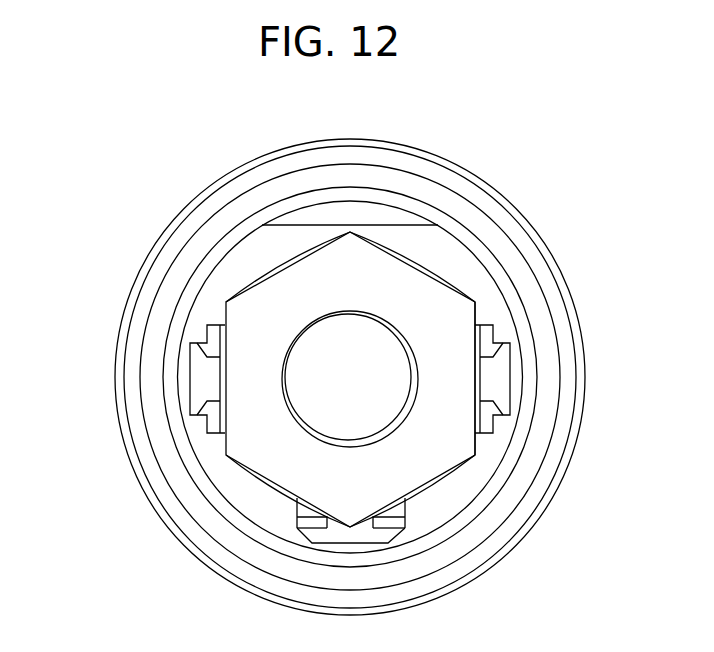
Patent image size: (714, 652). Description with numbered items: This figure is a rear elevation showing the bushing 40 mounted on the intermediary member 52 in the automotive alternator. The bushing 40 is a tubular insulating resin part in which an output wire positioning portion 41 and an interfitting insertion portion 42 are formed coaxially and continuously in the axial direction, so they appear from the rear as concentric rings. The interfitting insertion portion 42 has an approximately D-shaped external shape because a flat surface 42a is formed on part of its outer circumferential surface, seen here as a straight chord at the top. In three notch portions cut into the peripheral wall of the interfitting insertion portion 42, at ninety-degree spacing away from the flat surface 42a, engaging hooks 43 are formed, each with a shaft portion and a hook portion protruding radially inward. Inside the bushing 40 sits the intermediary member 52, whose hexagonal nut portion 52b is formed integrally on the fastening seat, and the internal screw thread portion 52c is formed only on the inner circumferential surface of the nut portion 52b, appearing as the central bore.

The bushing 40 is at (632, 150).
The output wire positioning portion 41 is at (537, 208).
The interfitting insertion portion 42 is at (495, 272).
The flat surface 42a is at (380, 222).
The engaging hooks 43 is at (500, 381).
The intermediary member 52 is at (233, 297).
The nut portion 52b is at (455, 437).
The internal screw thread portion 52c is at (395, 437).